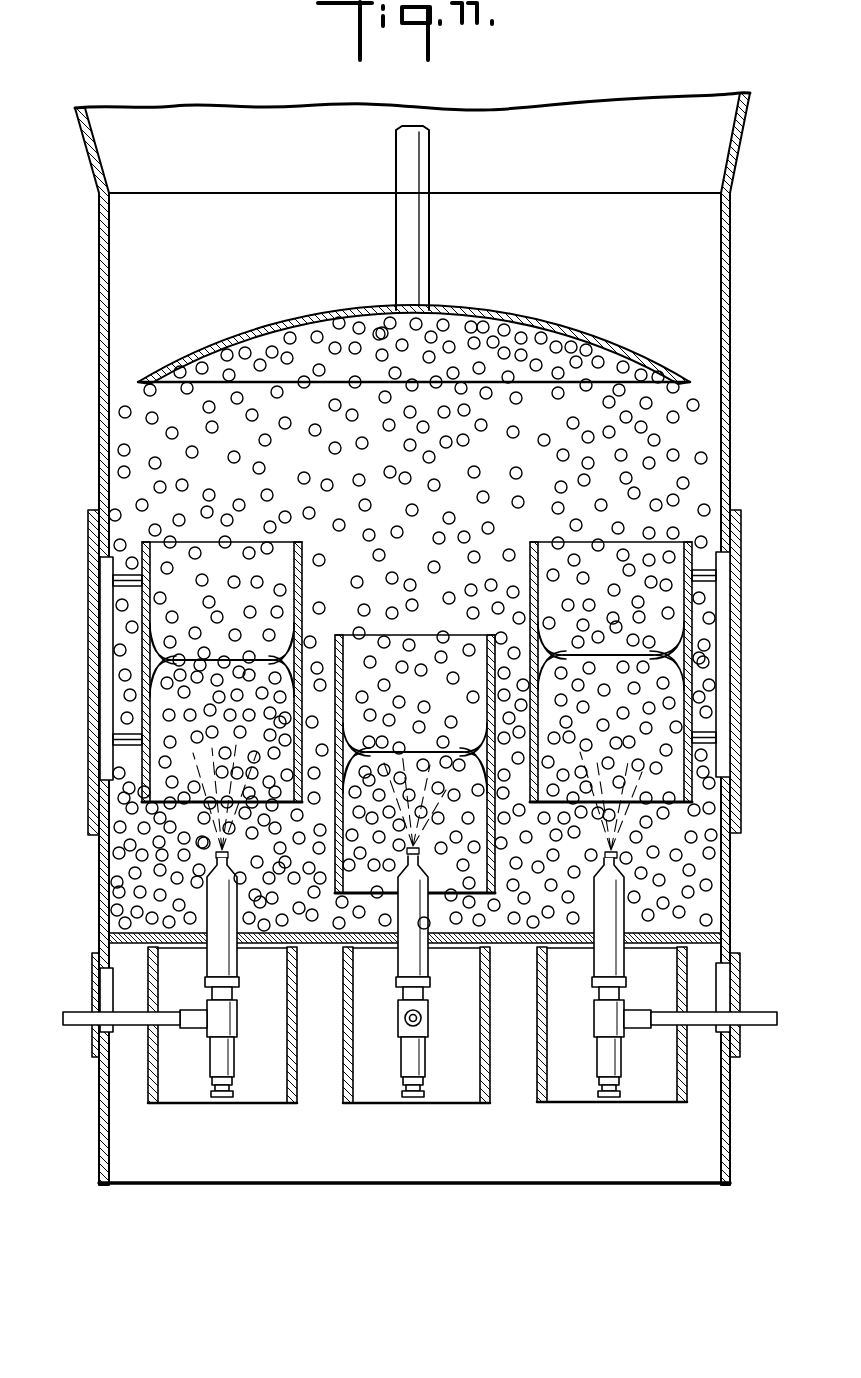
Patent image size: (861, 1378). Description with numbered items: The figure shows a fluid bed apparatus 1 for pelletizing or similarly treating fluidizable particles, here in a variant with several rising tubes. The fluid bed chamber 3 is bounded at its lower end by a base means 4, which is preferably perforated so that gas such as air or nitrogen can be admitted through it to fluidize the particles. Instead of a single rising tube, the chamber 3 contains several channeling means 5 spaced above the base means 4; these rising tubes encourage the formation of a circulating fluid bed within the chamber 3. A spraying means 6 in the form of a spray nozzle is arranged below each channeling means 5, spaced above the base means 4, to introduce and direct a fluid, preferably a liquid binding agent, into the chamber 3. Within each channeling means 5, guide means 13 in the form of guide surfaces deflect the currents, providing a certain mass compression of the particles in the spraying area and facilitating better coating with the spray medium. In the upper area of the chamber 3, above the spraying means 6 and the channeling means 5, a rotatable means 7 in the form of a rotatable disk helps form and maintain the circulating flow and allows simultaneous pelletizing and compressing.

The fluidized bed apparatus 1 is at (77, 683).
The fluid bed chamber 3 is at (708, 441).
The base means 4 is at (328, 946).
The channeling means 5 is at (304, 546).
The spraying means 6 is at (233, 910).
The rotatable means 7 is at (567, 331).
The guide means 13 is at (165, 626).